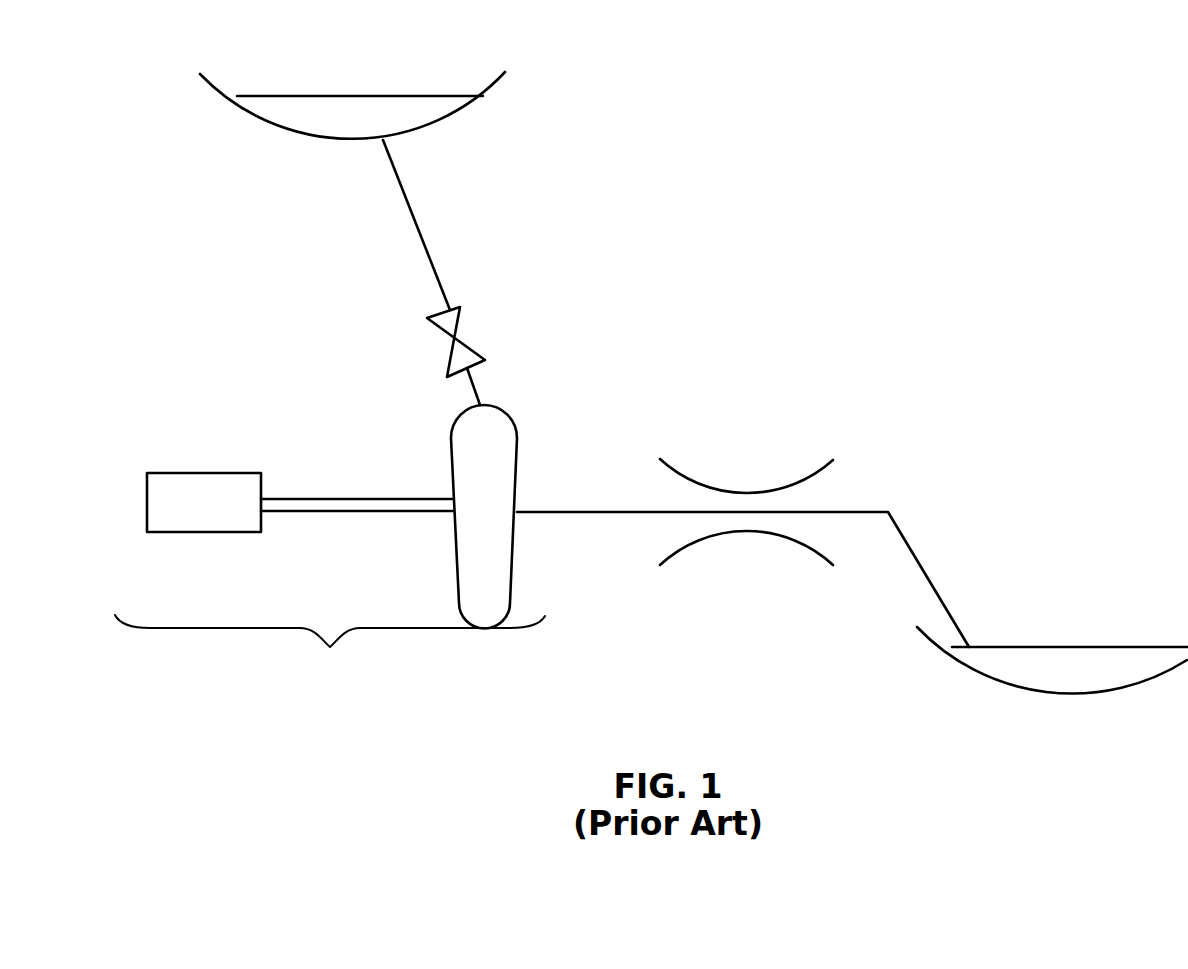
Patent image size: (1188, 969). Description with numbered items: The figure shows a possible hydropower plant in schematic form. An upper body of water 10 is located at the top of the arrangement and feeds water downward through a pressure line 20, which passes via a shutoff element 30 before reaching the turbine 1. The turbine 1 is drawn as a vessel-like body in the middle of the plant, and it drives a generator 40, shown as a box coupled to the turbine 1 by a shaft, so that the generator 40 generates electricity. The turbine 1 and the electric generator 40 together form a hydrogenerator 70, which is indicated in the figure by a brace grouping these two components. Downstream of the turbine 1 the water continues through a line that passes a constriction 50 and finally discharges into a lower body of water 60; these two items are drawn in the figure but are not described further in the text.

The apparatus / main vessel 1 is at (502, 405).
The first tank 10 is at (355, 95).
The supply line 20 is at (417, 227).
The valve 30 is at (463, 340).
The drive unit 40 is at (202, 472).
The venturi / nozzle 50 is at (742, 492).
The second tank 60 is at (1077, 645).
The assembly 70 is at (330, 651).